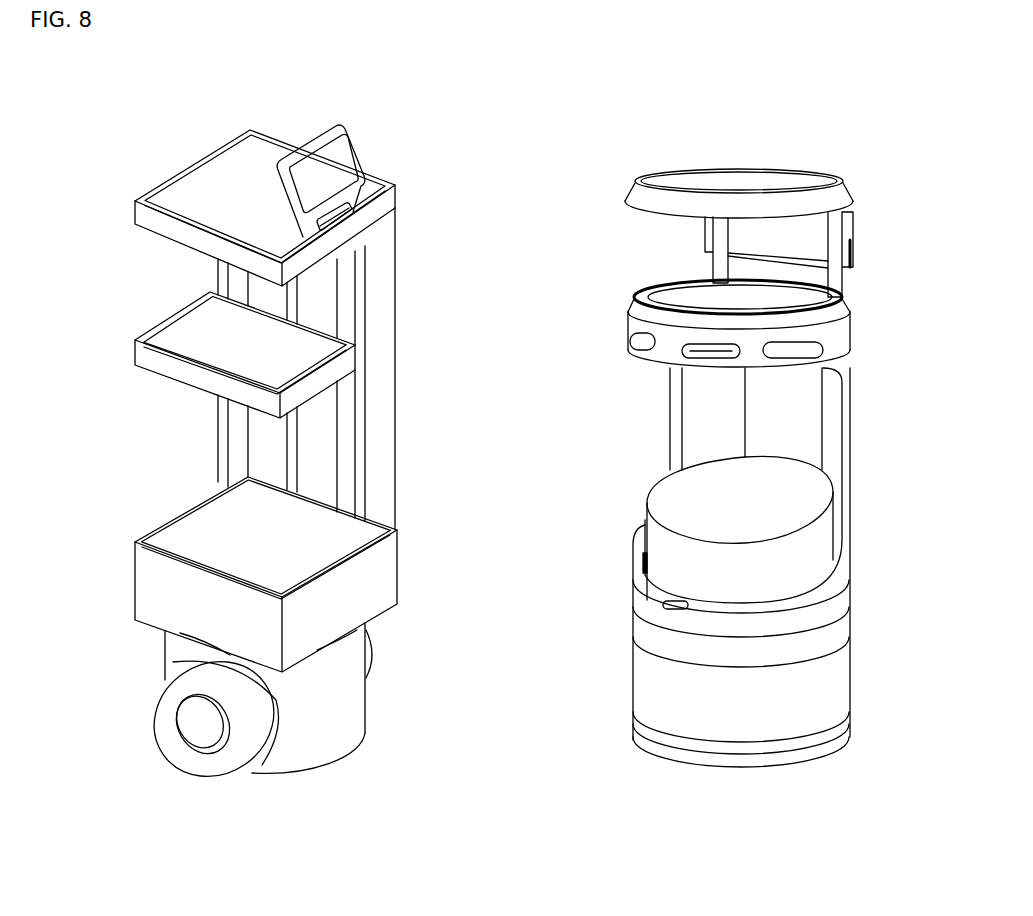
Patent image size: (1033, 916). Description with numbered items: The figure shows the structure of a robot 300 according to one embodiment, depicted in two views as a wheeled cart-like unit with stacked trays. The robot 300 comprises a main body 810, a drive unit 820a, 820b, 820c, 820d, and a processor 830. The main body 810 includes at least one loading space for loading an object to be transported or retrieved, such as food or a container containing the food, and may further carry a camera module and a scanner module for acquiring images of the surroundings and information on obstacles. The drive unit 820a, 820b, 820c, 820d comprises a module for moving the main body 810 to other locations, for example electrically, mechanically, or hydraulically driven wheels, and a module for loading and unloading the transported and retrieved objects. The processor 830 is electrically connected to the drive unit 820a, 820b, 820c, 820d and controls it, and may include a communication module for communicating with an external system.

The robot 300 is at (132, 85).
The main body 810 is at (423, 178).
The drive unit 820a is at (195, 727).
The drive unit 820b is at (154, 570).
The drive unit 820c is at (148, 356).
The drive unit 820d is at (142, 216).
The processor 830 is at (178, 645).